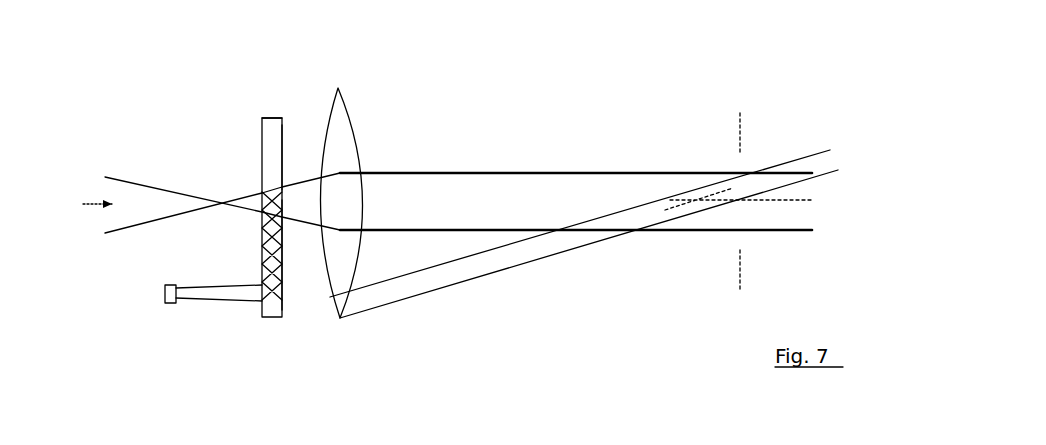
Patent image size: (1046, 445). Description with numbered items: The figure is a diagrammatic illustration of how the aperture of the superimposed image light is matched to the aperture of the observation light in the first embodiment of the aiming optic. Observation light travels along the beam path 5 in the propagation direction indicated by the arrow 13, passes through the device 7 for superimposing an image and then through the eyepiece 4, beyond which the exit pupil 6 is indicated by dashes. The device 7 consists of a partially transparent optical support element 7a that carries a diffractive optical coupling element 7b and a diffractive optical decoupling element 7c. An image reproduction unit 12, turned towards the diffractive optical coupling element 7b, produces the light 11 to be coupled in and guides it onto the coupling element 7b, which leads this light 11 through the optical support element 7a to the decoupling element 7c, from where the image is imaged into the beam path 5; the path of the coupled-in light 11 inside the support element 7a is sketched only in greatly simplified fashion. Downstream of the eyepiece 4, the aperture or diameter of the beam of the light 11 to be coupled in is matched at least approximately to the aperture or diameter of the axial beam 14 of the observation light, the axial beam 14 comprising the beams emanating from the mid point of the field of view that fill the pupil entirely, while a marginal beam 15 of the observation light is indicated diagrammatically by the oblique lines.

The eyepiece 4 is at (355, 101).
The beam path 5 is at (242, 191).
The exit pupil 6 is at (738, 282).
The device for superimposing an image 7 is at (268, 324).
The optical support element 7a is at (273, 128).
The diffractive optical coupling element 7b is at (288, 303).
The diffractive optical decoupling element 7c is at (288, 172).
The light to be coupled in 11 is at (212, 277).
The image reproduction unit 12 is at (167, 307).
The arrow indicating propagation direction 13 is at (93, 205).
The axial beam 14 is at (131, 174).
The marginal beam 15 is at (421, 302).